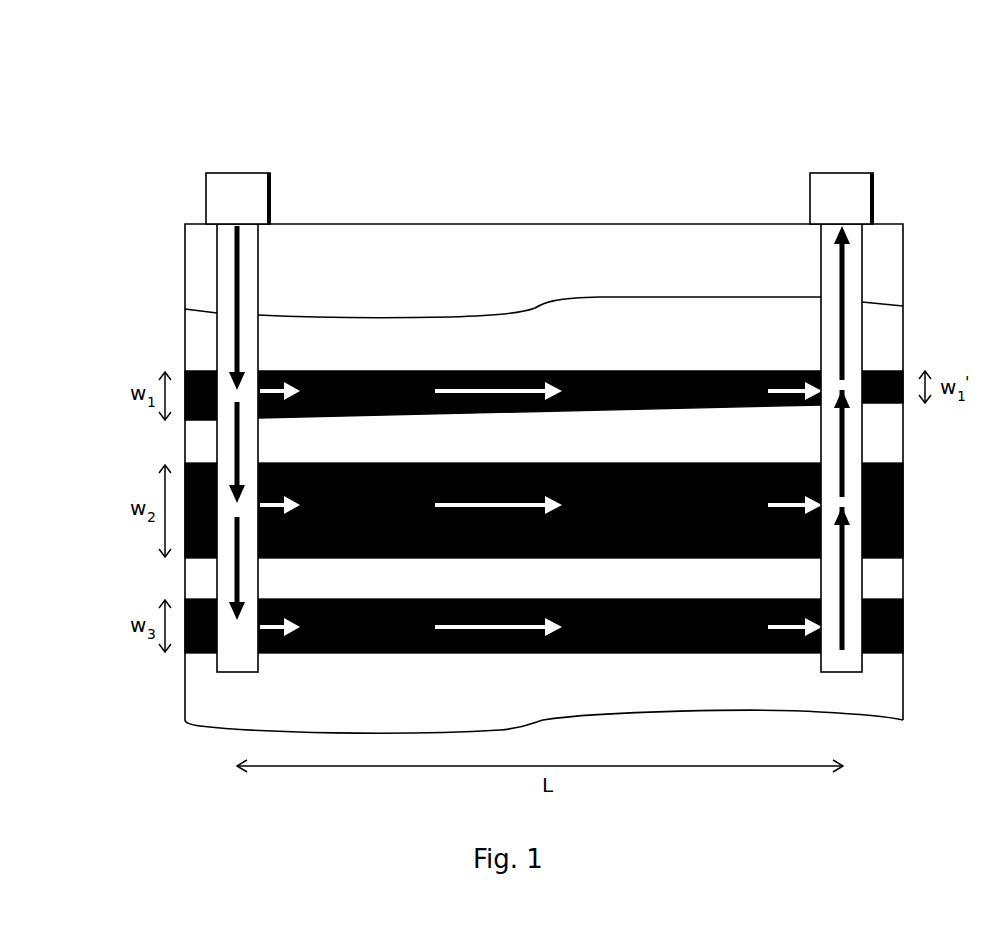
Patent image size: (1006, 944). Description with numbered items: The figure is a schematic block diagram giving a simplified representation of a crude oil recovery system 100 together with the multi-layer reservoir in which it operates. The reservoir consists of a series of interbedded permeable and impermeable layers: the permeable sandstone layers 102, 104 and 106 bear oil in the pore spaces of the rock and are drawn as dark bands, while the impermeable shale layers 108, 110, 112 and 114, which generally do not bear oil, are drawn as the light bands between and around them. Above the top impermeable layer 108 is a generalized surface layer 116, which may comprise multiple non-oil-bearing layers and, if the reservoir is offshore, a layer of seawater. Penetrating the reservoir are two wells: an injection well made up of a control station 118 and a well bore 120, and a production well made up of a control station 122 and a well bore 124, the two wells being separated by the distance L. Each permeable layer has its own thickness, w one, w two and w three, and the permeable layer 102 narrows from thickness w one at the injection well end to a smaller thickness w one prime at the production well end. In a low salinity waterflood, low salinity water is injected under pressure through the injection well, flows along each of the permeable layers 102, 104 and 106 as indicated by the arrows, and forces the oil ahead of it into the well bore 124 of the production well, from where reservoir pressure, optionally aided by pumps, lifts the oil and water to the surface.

The crude oil recovery system 100 is at (162, 97).
The permeable layer 102 is at (903, 370).
The permeable layer 104 is at (903, 510).
The permeable layer 106 is at (903, 631).
The impermeable layer 108 is at (903, 317).
The impermeable layer 110 is at (903, 432).
The impermeable layer 112 is at (903, 577).
The impermeable layer 114 is at (903, 697).
The surface layer 116 is at (903, 248).
The control station 118 is at (237, 173).
The well bore 120 is at (217, 275).
The control station 122 is at (843, 173).
The well bore 124 is at (821, 258).